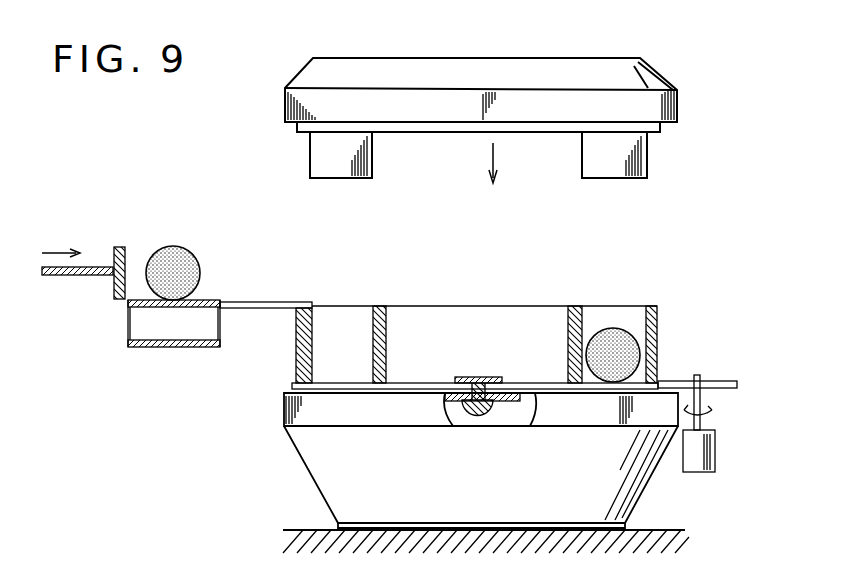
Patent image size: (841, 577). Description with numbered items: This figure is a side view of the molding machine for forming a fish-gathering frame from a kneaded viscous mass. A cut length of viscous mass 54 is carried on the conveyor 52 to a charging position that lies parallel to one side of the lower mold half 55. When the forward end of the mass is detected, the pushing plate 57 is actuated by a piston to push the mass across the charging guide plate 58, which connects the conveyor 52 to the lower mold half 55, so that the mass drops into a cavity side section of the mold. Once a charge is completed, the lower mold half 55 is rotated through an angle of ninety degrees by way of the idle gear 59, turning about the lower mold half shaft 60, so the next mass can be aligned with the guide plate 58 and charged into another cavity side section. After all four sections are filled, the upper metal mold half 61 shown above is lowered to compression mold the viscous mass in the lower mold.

The conveyor 52 is at (178, 347).
The viscous mass 54 is at (173, 247).
The lower mold half 55 is at (386, 318).
The pushing plate 57 is at (120, 247).
The charging guide plate 58 is at (262, 308).
The idle gear 59 is at (721, 381).
The lower mold half shaft 60 is at (487, 377).
The upper metal mold half 61 is at (368, 159).